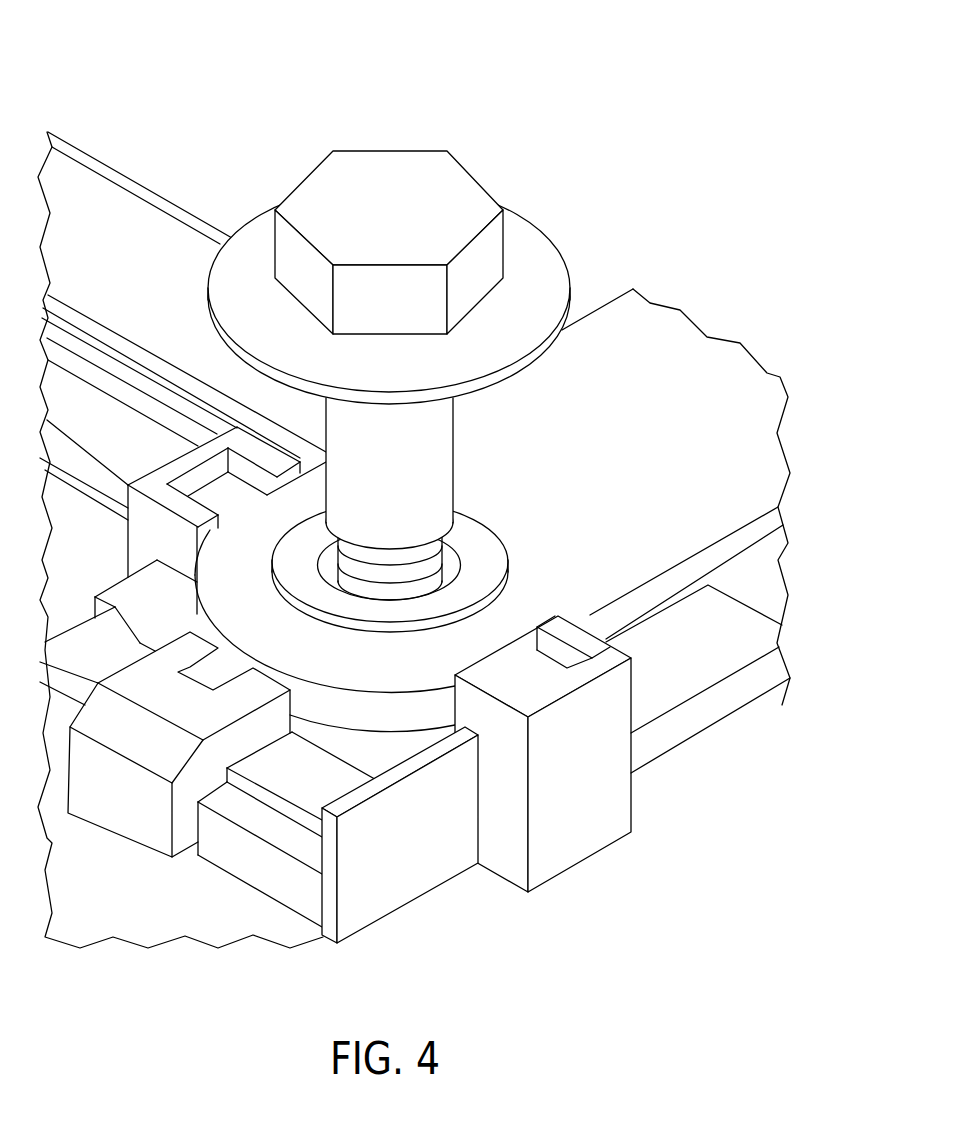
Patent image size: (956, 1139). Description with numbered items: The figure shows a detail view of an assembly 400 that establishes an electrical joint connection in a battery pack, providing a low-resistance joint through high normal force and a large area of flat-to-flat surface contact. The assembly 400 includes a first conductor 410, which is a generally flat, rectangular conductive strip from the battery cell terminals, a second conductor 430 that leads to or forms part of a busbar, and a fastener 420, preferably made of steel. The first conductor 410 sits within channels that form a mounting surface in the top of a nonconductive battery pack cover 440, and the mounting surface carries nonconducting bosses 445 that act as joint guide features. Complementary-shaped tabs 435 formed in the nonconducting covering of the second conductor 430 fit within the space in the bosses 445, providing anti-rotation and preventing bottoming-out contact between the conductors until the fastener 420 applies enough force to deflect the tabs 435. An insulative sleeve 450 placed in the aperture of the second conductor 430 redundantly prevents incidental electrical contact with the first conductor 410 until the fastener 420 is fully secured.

The assembly 400 is at (216, 104).
The first conductor 410 is at (125, 212).
The fastener 420 is at (490, 192).
The second conductor 430 is at (773, 480).
The tabs 435 is at (535, 675).
The battery pack cover 440 is at (718, 712).
The bosses 445 is at (588, 845).
The insulative sleeve 450 is at (508, 552).